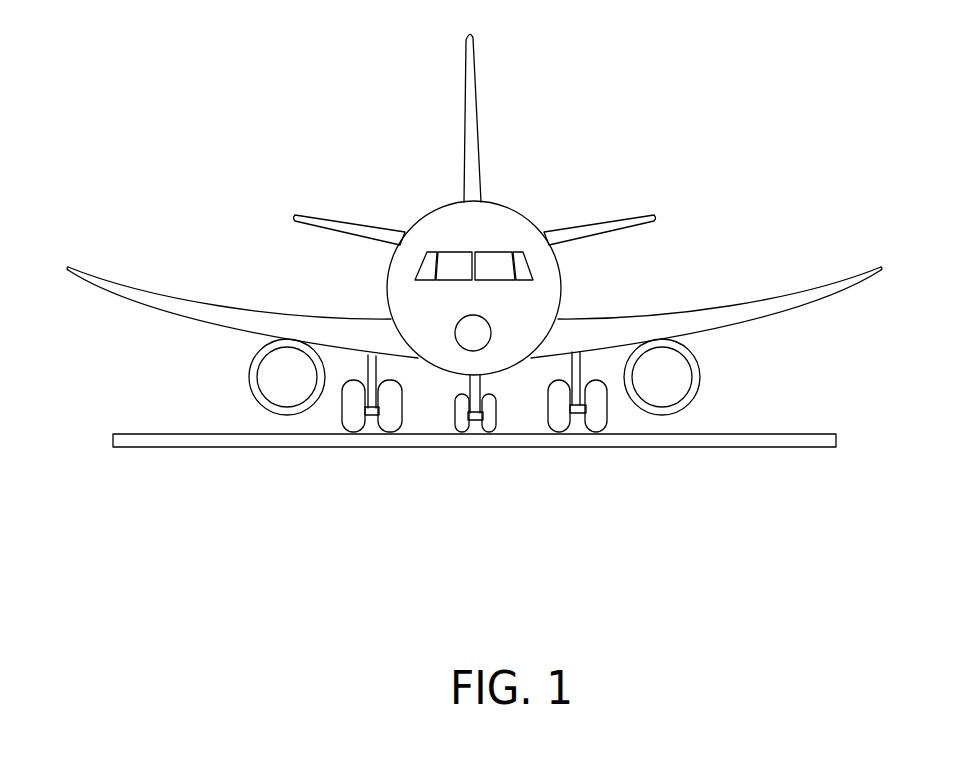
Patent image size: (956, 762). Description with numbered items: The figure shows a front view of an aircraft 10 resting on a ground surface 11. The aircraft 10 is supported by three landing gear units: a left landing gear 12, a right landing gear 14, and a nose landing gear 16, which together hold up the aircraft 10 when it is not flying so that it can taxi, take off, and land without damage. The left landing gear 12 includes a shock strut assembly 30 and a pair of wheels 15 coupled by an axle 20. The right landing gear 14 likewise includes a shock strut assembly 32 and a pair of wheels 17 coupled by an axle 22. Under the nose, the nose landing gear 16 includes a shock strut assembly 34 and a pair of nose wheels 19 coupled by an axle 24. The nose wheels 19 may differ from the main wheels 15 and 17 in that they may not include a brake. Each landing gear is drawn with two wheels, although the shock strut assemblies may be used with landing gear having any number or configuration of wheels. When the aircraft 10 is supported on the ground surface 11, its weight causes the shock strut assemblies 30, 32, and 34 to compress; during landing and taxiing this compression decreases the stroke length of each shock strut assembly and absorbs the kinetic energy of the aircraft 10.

The aircraft 10 is at (318, 119).
The ground surface 11 is at (778, 434).
The left landing gear 12 is at (651, 394).
The right landing gear 14 is at (292, 408).
The pair of wheels 15 is at (553, 425).
The nose landing gear 16 is at (511, 400).
The pair of wheels 17 is at (343, 426).
The nose wheels 19 is at (458, 425).
The axle 20 is at (578, 416).
The axle 22 is at (368, 418).
The axle 24 is at (474, 422).
The shock strut assembly 30 is at (590, 375).
The shock strut assembly 32 is at (365, 368).
The shock strut assembly 34 is at (470, 395).